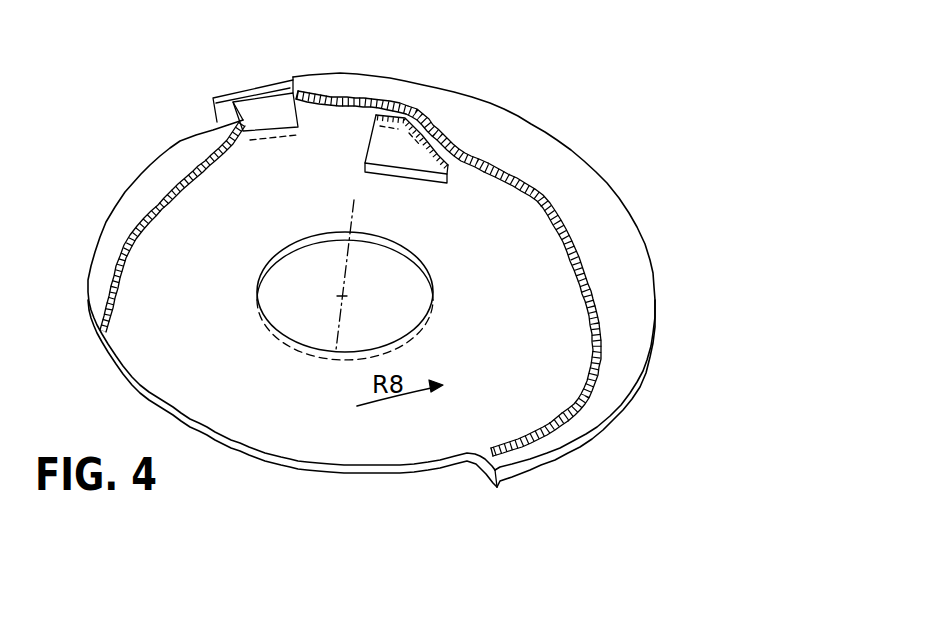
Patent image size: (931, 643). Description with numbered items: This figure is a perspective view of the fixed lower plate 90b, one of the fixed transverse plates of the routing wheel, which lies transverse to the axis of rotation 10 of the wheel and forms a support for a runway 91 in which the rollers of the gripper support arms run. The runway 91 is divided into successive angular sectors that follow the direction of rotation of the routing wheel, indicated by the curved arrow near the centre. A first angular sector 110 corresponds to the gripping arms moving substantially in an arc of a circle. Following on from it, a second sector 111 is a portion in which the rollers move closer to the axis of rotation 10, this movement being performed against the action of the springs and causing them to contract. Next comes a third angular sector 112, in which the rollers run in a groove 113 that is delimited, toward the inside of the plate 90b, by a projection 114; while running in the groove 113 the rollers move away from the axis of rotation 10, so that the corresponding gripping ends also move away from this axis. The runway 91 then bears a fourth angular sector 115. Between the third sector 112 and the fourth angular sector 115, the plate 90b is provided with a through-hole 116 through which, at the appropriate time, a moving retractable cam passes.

The axis of rotation 10 is at (340, 317).
The fixed lower plate 90b is at (397, 468).
The runway 91 is at (550, 424).
The first angular sector 110 is at (259, 456).
The second sector 111 is at (592, 355).
The third angular sector 112 is at (450, 133).
The groove 113 is at (432, 136).
The projection 114 is at (403, 150).
The fourth angular sector 115 is at (147, 215).
The through-hole 116 is at (270, 118).